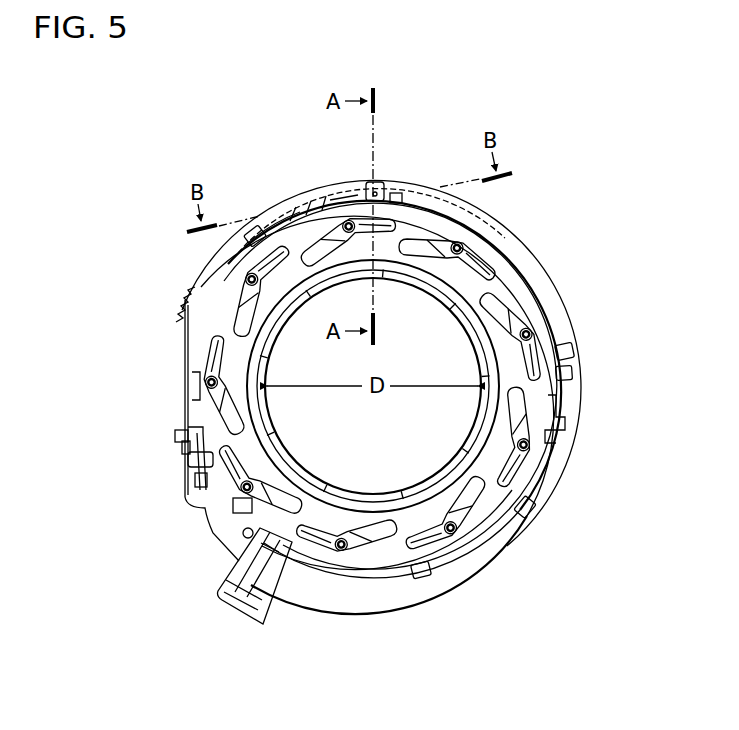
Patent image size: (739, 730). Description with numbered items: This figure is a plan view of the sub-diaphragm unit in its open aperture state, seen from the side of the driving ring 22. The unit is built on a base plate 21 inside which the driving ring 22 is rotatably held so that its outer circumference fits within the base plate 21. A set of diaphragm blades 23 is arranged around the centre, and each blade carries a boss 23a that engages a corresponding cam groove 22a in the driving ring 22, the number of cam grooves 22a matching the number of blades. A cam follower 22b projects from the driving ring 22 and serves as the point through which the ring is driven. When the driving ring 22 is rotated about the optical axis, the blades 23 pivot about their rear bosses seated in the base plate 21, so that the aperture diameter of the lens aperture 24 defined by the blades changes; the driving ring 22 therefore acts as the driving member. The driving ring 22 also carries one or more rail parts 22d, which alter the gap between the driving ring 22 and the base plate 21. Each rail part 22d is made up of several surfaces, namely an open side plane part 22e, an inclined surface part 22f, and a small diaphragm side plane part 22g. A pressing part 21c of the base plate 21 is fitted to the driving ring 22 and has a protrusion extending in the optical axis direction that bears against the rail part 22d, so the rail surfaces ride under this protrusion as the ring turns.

The base plate 21 is at (206, 520).
The pressing part 21c is at (377, 184).
The driving ring 22 is at (323, 573).
The cam groove 22a is at (186, 410).
The cam follower 22b is at (263, 622).
The rail part 22d is at (246, 240).
The open side plane part 22e is at (322, 202).
The inclined surface part 22f is at (358, 192).
The small diaphragm side plane part 22g is at (396, 198).
The diaphragm blade 23 is at (412, 490).
The boss 23a is at (198, 384).
The lens aperture 24 is at (430, 330).